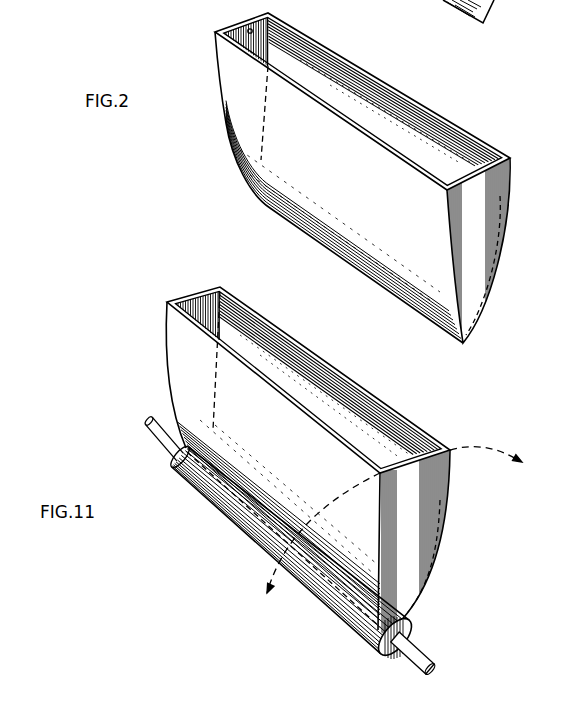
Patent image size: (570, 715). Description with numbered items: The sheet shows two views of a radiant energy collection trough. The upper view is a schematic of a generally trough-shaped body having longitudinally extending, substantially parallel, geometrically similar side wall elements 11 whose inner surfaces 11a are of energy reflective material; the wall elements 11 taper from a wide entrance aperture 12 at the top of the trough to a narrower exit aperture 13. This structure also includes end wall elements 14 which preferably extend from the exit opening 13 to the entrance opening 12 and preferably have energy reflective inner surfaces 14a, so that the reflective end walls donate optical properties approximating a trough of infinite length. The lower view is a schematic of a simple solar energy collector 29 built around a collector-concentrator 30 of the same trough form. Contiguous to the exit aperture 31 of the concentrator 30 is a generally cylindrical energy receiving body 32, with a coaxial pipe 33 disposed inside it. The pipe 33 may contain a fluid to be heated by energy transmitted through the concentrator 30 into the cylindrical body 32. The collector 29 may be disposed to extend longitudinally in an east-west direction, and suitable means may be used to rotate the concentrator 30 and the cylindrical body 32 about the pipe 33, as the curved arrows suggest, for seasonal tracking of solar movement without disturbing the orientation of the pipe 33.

In FIG. 2, the side wall element 11 is at (408, 97).
In FIG. 2, the inner surface 11a is at (419, 149).
In FIG. 2, the entrance aperture 12 is at (485, 145).
In FIG. 2, the exit aperture 13 is at (487, 16).
In FIG. 2, the end wall element 14 is at (484, 241).
In FIG. 2, the inner surface of end wall 14a is at (249, 30).
In FIG. 11, the solar energy collector 29 is at (460, 508).
In FIG. 11, the collector-concentrator 30 is at (423, 433).
In FIG. 11, the exit aperture 31 is at (418, 616).
In FIG. 11, the energy receiving body 32 is at (226, 513).
In FIG. 11, the pipe 33 is at (418, 648).